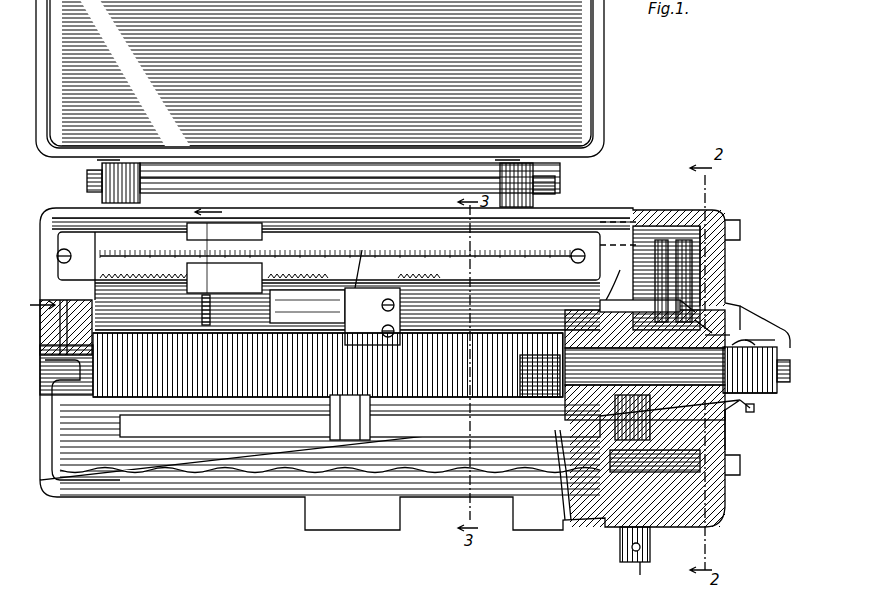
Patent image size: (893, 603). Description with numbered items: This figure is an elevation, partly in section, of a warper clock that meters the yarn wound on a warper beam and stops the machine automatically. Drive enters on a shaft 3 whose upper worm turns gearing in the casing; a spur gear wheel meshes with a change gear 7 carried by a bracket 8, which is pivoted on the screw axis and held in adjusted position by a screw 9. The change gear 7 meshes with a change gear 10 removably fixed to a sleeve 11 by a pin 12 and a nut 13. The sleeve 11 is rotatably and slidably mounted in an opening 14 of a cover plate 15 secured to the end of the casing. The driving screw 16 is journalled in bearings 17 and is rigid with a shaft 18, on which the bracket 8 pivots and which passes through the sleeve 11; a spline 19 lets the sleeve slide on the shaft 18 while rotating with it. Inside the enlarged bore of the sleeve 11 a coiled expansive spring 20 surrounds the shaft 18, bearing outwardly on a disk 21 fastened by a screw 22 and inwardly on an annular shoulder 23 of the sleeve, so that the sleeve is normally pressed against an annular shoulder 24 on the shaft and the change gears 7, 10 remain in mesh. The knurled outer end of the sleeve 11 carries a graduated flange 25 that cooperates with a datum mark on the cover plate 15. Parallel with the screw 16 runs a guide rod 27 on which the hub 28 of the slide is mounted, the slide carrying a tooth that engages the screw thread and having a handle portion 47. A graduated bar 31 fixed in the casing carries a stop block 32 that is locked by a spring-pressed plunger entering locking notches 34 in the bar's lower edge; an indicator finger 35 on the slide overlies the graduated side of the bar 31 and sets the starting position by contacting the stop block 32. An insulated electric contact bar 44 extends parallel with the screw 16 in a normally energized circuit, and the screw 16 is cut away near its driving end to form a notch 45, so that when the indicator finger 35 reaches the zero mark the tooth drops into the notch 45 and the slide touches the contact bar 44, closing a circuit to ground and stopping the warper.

The shaft 3 is at (637, 578).
The change gear 7 is at (681, 262).
The bracket 8 is at (662, 262).
The screw 9 is at (678, 500).
The change gear 10 is at (692, 308).
The sleeve 11 is at (785, 332).
The pin 12 is at (706, 331).
The nut 13 is at (746, 406).
The opening 14 is at (727, 432).
The cover plate 15 is at (726, 266).
The screw 16 is at (112, 395).
The bearings 17 is at (320, 250).
The shaft 18 is at (745, 350).
The spline 19 is at (755, 412).
The coiled expansive spring 20 is at (780, 352).
The disk 21 is at (787, 388).
The screw 22 is at (790, 367).
The annular shoulder 23 is at (773, 338).
The annular shoulder 24 is at (568, 475).
The graduated flange 25 is at (716, 348).
The guide rod 27 is at (101, 306).
The hub 28 is at (305, 300).
The graduated bar 31 is at (538, 250).
The stop block 32 is at (237, 232).
The locking notches 34 is at (140, 272).
The indicator finger 35 is at (393, 250).
The electric contact bar 44 is at (158, 400).
The notch 45 is at (548, 360).
The handle portion 47 is at (345, 410).